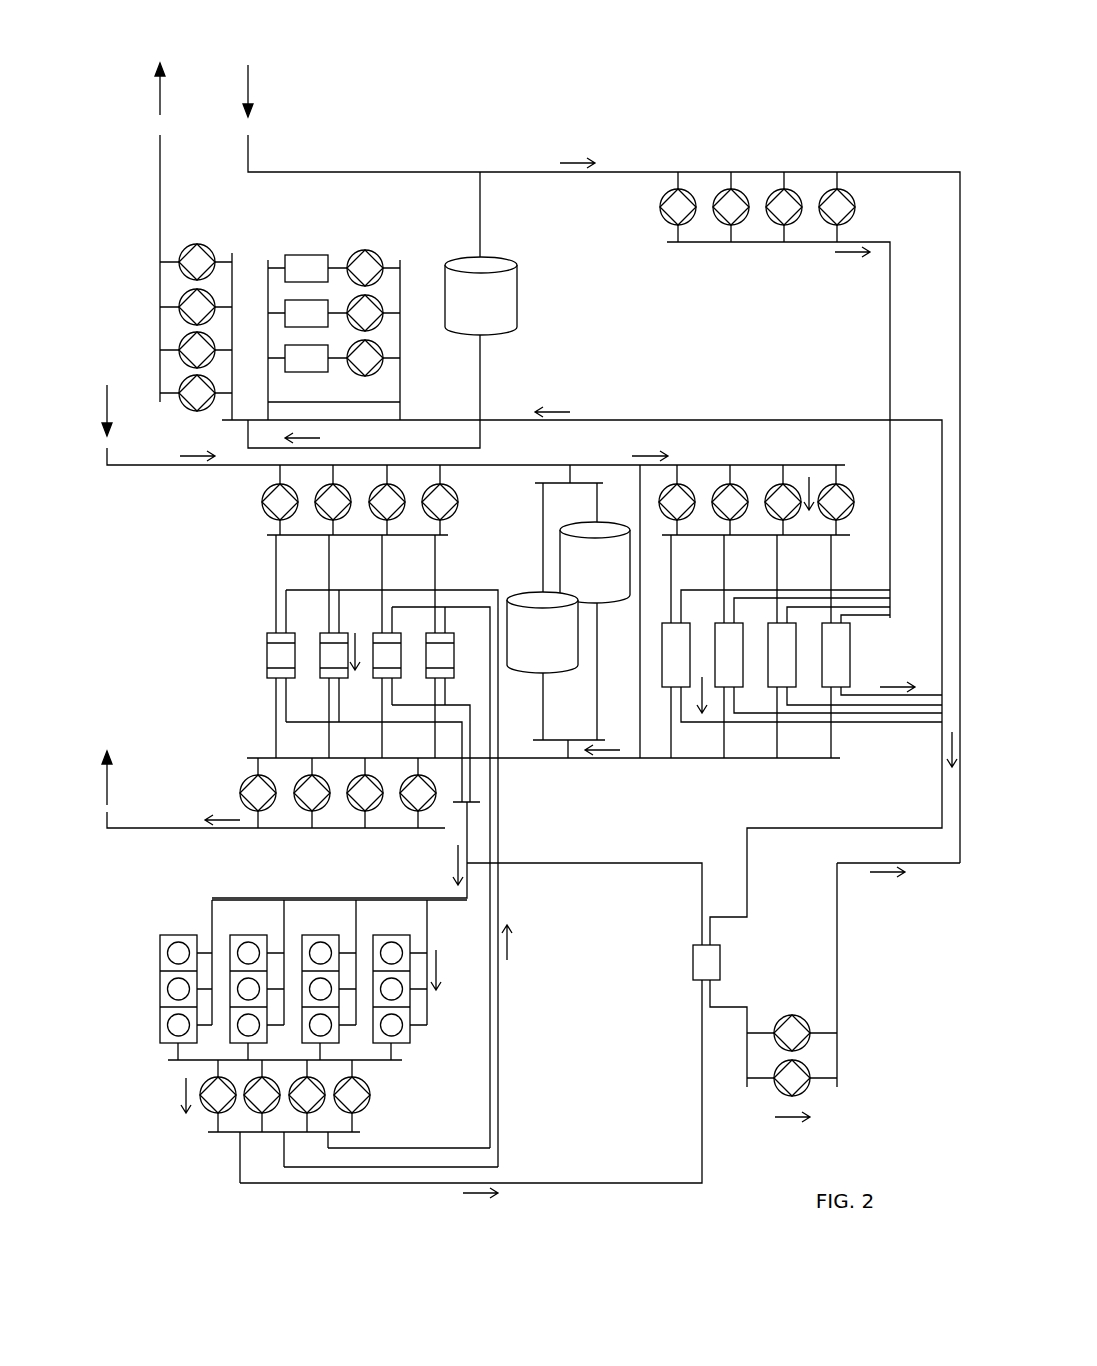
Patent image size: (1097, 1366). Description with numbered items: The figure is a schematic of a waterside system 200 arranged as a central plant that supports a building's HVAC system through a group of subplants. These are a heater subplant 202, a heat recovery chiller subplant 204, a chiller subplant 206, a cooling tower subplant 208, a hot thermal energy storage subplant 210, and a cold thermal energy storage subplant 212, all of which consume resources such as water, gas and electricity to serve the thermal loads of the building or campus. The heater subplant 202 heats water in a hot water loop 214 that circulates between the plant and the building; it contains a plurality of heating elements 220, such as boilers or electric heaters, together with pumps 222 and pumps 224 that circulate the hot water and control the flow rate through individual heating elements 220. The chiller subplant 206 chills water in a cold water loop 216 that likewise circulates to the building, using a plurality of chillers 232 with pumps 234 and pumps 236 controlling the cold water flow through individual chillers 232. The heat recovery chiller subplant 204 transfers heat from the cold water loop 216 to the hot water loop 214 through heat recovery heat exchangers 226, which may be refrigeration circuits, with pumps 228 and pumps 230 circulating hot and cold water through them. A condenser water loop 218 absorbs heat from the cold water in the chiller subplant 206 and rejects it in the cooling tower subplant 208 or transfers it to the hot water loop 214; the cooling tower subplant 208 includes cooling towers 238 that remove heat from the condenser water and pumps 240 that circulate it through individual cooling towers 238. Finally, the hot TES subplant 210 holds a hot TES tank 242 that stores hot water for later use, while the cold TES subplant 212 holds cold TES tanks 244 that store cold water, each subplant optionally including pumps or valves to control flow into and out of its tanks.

The waterside system 200 is at (816, 40).
The heater subplant 202 is at (427, 158).
The heat recovery chiller subplant 204 is at (881, 752).
The chiller subplant 206 is at (211, 577).
The cooling tower subplant 208 is at (131, 980).
The hot thermal energy storage subplant 210 is at (546, 311).
The cold thermal energy storage subplant 212 is at (512, 537).
The hot water loop 214 is at (158, 179).
The cold water loop 216 is at (166, 469).
The condenser water loop 218 is at (682, 1186).
The heating elements 220 is at (292, 252).
The pumps 222 is at (205, 244).
The pumps 224 is at (374, 250).
The heat recovery heat exchangers 226 is at (852, 650).
The pumps 228 is at (853, 486).
The pumps 230 is at (855, 205).
The chillers 232 is at (265, 646).
The pumps 234 is at (241, 784).
The pumps 236 is at (259, 494).
The cooling towers 238 is at (412, 1034).
The pumps 240 is at (370, 1104).
The hot TES tank 242 is at (507, 279).
The cold TES tanks 244 is at (578, 525).